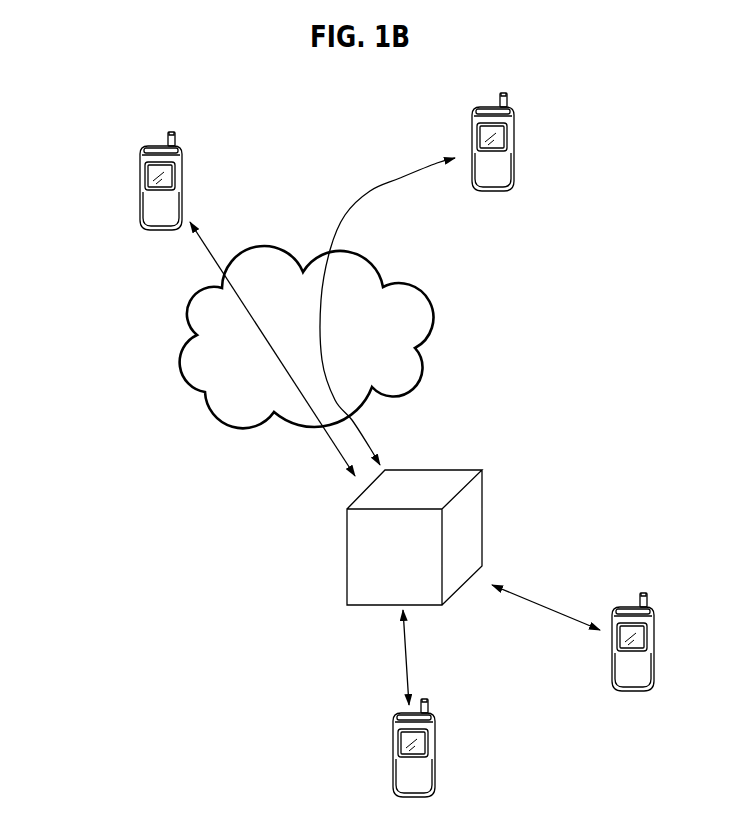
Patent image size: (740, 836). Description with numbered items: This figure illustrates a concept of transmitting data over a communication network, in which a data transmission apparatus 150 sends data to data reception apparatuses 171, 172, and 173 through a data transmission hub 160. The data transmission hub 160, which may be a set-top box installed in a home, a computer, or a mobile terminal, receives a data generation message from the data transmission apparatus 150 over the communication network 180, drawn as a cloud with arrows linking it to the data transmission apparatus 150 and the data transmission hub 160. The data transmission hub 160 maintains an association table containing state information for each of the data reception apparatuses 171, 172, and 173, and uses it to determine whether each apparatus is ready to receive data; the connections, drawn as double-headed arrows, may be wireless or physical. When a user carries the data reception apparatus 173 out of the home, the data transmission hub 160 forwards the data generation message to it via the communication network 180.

The data transmission apparatus 150 is at (141, 174).
The data transmission hub 160 is at (433, 470).
The data reception apparatus 171 is at (436, 745).
The data reception apparatus 172 is at (628, 605).
The data reception apparatus 173 is at (472, 140).
The communication network 180 is at (205, 397).